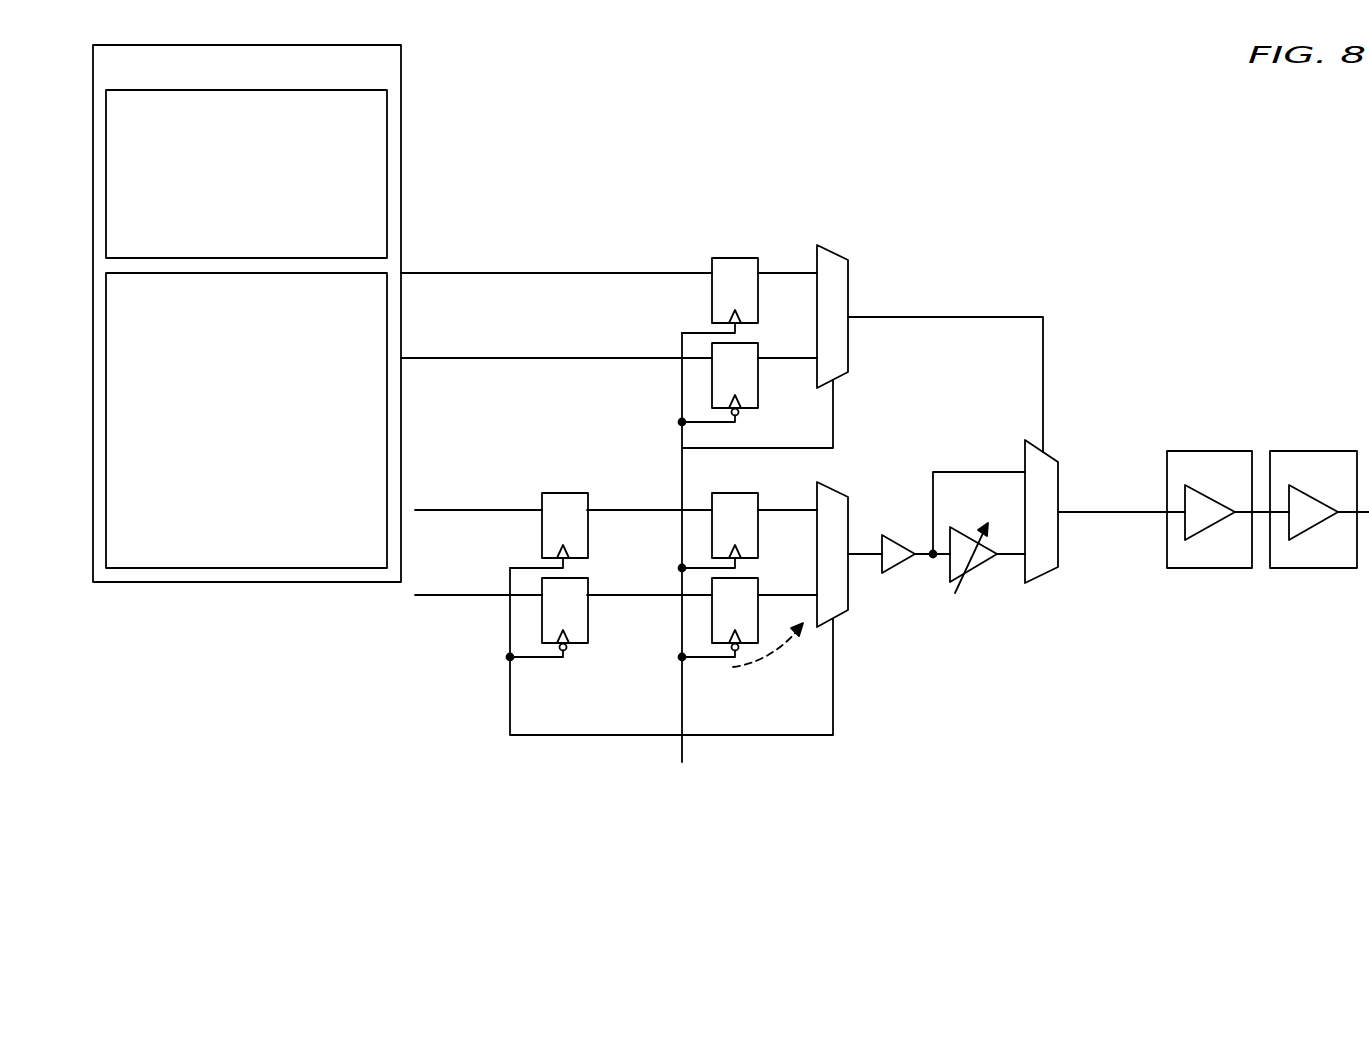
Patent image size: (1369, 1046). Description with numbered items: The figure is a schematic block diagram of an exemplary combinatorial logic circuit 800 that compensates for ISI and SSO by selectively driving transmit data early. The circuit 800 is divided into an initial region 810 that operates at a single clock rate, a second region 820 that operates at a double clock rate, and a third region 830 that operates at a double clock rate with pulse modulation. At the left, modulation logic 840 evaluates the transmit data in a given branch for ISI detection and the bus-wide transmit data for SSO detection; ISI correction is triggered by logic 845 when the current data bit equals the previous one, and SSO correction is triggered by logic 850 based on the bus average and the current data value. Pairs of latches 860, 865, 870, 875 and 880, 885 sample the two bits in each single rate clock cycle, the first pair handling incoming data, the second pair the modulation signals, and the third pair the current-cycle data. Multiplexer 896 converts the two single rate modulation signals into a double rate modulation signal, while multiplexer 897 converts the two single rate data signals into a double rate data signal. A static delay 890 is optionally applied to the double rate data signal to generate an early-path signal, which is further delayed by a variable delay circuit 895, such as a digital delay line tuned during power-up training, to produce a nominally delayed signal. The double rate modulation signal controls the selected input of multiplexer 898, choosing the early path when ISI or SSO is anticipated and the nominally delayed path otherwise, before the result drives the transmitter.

The combinatorial logic circuit 800 is at (1258, 135).
The initial region 810 is at (752, 204).
The second region 820 is at (948, 204).
The third region 830 is at (1135, 204).
The modulation logic 840 is at (401, 68).
The ISI correction logic 845 is at (246, 174).
The SSO correction logic 850 is at (246, 420).
The latch 860 is at (566, 491).
The latch 865 is at (587, 621).
The latch 870 is at (736, 256).
The latch 875 is at (758, 392).
The latch 880 is at (738, 491).
The latch 885 is at (758, 582).
The static delay 890 is at (902, 571).
The variable delay circuit 895 is at (996, 571).
The multiplexer 896 is at (840, 254).
The multiplexer 897 is at (834, 488).
The multiplexer 898 is at (1058, 487).